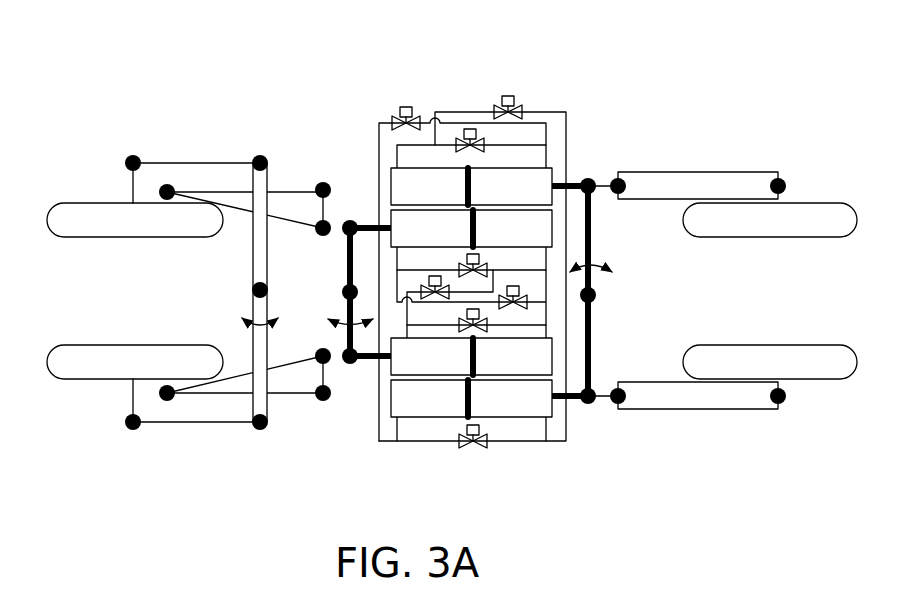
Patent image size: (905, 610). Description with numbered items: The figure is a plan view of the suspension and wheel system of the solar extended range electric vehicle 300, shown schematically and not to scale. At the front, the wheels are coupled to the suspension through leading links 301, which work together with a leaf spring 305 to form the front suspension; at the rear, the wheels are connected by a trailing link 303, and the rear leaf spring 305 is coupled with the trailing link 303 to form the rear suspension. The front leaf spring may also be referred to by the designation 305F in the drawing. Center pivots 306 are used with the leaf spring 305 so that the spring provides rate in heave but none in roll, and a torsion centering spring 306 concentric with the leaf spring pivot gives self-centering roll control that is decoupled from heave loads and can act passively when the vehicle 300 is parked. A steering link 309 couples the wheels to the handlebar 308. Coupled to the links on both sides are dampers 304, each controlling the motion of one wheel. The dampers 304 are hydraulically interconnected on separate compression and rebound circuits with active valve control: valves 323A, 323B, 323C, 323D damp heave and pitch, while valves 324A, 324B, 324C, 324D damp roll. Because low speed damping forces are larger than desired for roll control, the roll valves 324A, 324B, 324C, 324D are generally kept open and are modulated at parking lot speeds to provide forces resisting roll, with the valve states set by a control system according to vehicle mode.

The solar extended range electric vehicle 300 is at (112, 90).
The leading links 301 is at (215, 393).
The trailing link 303 is at (702, 412).
The dampers 304 is at (565, 225).
The leaf spring 305 is at (595, 355).
The left pivot bar 305F is at (343, 266).
The center pivots 306 is at (607, 297).
The handlebar 308 is at (242, 339).
The steering link 309 is at (165, 425).
The valve 323A is at (488, 155).
The valve 323B is at (463, 253).
The valve 323C is at (487, 338).
The valve 323D is at (485, 452).
The valve 324A is at (400, 105).
The valve 324B is at (507, 92).
The valve 324C is at (430, 299).
The valve 324D is at (513, 316).